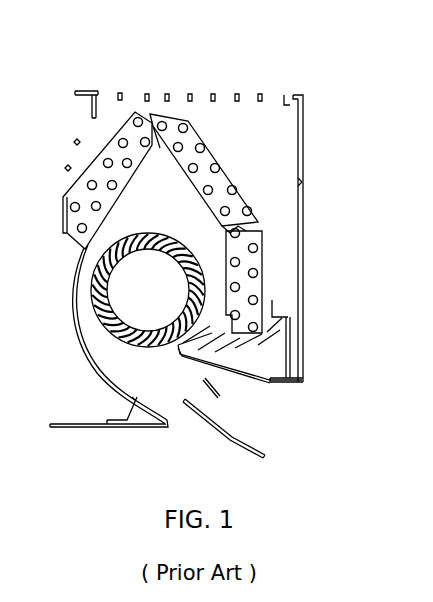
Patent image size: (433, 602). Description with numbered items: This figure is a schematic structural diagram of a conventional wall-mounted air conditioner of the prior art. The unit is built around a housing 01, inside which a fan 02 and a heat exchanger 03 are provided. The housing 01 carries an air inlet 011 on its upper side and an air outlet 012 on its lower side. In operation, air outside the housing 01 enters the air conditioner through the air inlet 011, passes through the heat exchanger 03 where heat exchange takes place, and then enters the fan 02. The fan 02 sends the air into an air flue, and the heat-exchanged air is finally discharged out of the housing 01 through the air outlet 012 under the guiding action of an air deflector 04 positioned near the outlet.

The housing 01 is at (302, 180).
The air inlet 011 is at (205, 95).
The air outlet 012 is at (250, 400).
The fan 02 is at (125, 285).
The heat exchanger 03 is at (248, 263).
The air deflector 04 is at (240, 438).